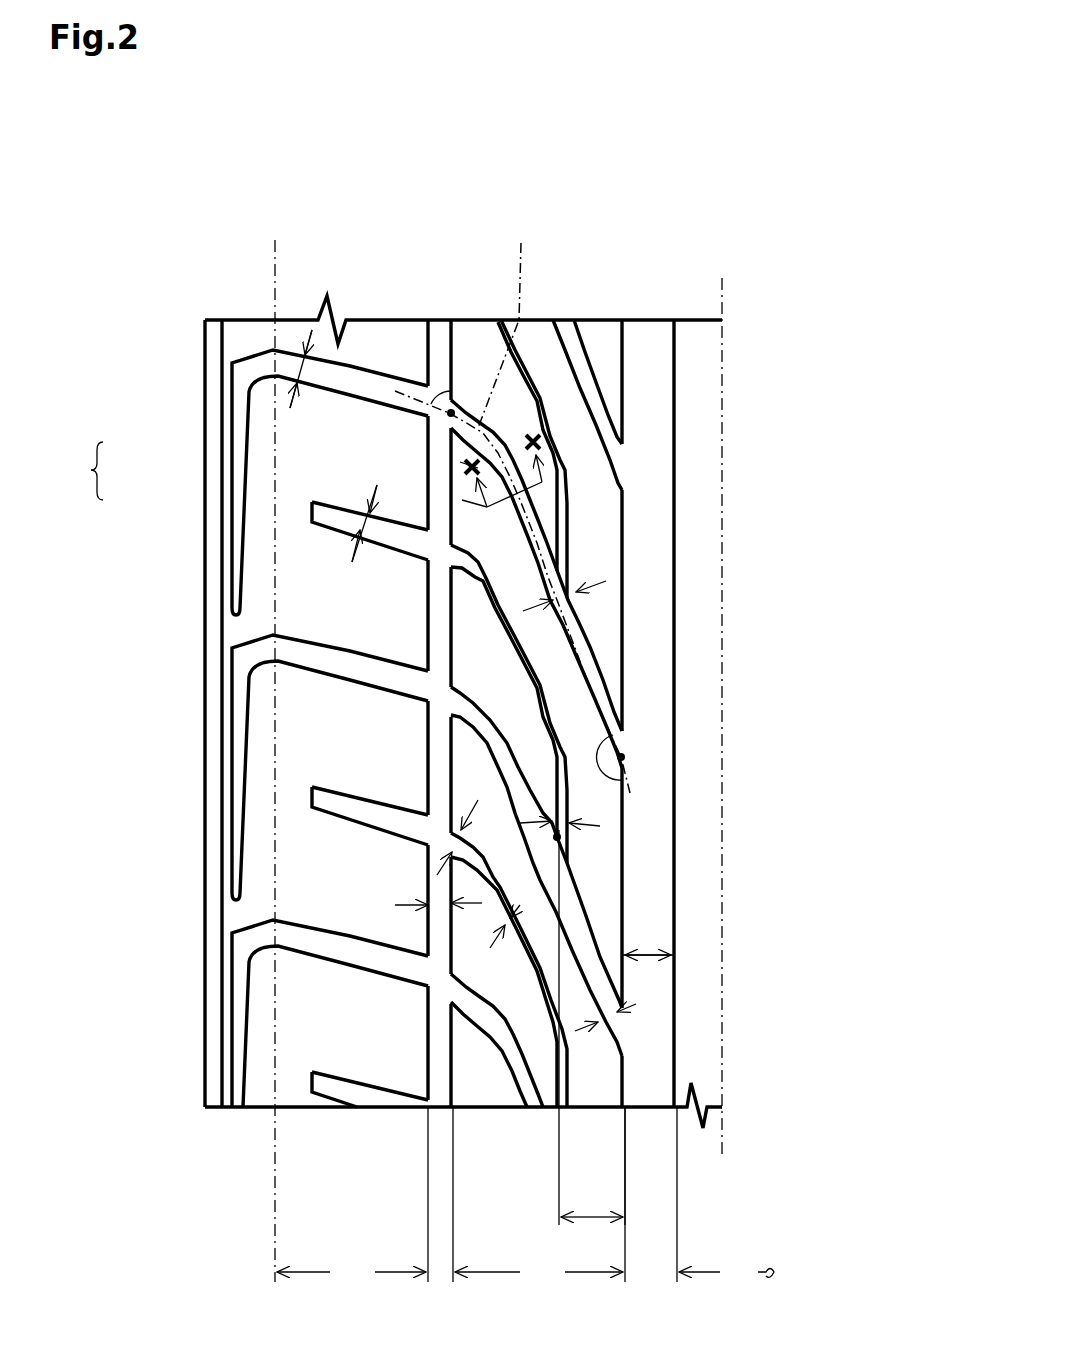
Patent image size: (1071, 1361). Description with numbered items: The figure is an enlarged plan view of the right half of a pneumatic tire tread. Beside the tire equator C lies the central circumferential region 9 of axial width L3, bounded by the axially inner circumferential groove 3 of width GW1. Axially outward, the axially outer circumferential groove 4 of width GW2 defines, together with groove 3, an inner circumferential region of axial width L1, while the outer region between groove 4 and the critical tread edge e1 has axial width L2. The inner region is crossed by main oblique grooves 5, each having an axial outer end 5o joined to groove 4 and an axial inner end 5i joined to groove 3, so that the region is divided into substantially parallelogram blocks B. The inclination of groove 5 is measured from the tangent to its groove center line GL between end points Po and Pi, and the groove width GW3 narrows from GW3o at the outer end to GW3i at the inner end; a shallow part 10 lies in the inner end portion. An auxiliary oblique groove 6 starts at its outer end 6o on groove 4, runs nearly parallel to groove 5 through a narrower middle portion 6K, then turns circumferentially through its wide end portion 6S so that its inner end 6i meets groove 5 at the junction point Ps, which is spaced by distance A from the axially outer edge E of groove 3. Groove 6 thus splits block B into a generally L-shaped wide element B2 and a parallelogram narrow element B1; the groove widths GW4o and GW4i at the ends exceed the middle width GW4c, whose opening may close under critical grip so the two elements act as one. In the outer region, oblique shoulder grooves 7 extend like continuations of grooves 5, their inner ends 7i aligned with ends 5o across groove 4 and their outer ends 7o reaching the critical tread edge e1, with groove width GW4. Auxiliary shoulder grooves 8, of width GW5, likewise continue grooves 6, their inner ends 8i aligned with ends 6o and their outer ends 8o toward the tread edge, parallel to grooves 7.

The axially inner circumferential groove 3 is at (660, 1062).
The axially outer circumferential groove 4 is at (433, 1047).
The main oblique groove 5 is at (530, 515).
The auxiliary oblique groove 6 is at (503, 590).
The oblique shoulder groove 7 is at (440, 722).
The auxiliary shoulder groove 8 is at (452, 845).
The central circumferential region 9 is at (683, 360).
The shallow part 10 is at (594, 383).
The groove center line GL is at (512, 502).
The outer end point of groove center line Po is at (449, 413).
The inner end point of groove center line Pi is at (624, 757).
The junction point Ps is at (560, 838).
The block B is at (308, 471).
The narrow element B1 is at (462, 500).
The wide element B2 is at (460, 462).
The axial outer end of main oblique groove 5o is at (460, 385).
The axial inner end of main oblique groove 5i is at (627, 713).
The axial outer end of auxiliary oblique groove 6o is at (447, 580).
The axial inner end of auxiliary oblique groove 6i is at (570, 842).
The narrower middle portion 6K is at (490, 617).
The wide end portion 6S is at (540, 815).
The axial outer end of oblique shoulder groove 7o is at (418, 688).
The axial inner end of oblique shoulder groove 7i is at (455, 740).
The axial outer end of auxiliary shoulder groove 8o is at (450, 833).
The axial inner end of auxiliary shoulder groove 8i is at (472, 853).
The groove width of inner circumferential groove GW1 is at (648, 955).
The groove width of outer circumferential groove GW2 is at (416, 919).
The width of main oblique groove GW3 is at (606, 581).
The width of main oblique groove at outer end GW3o is at (550, 779).
The width of main oblique groove at inner end GW3i is at (636, 1004).
The groove width of oblique shoulder groove GW4 is at (300, 370).
The groove width at outer end of auxiliary oblique groove GW4o is at (437, 875).
The groove width in middle part of auxiliary oblique groove GW4c is at (505, 940).
The groove width at inner end of auxiliary oblique groove GW4i is at (600, 826).
The groove width of auxiliary shoulder groove GW5 is at (360, 530).
The critical tread edge e1 is at (274, 240).
The tire equator C is at (716, 703).
The axial width of axially inner circumferential region L1 is at (539, 1197).
The axial width of axially outer circumferential region L2 is at (352, 1197).
The axial width of central circumferential region L3 is at (725, 1197).
The distance A is at (592, 1027).
The axially outer edge of inner circumferential groove E is at (632, 1060).